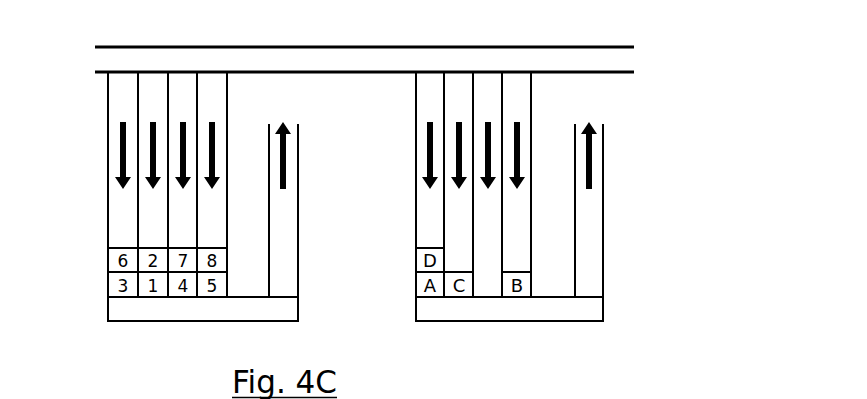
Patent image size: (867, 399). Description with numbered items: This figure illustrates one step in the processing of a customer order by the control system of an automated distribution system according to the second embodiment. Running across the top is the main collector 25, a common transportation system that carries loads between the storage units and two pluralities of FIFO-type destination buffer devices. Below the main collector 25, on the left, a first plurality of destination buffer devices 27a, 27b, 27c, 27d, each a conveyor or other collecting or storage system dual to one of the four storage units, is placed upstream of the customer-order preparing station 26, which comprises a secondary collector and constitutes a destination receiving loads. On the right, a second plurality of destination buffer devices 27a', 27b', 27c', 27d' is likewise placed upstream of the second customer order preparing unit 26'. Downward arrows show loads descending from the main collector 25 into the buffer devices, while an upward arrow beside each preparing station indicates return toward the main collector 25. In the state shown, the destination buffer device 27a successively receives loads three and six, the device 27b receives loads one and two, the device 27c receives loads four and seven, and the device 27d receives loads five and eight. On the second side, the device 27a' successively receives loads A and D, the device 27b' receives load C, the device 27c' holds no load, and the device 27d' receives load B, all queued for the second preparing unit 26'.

The main collector 25 is at (583, 46).
The customer-order preparing station 26 is at (169, 321).
The second customer order preparing unit 26' is at (471, 321).
The destination buffer device 27a is at (82, 196).
The destination buffer device 27b is at (97, 184).
The destination buffer device 27c is at (112, 184).
The destination buffer device 27d is at (127, 184).
The destination buffer device 27a' is at (386, 196).
The destination buffer device 27b' is at (400, 184).
The destination buffer device 27c' is at (415, 184).
The destination buffer device 27d' is at (429, 184).